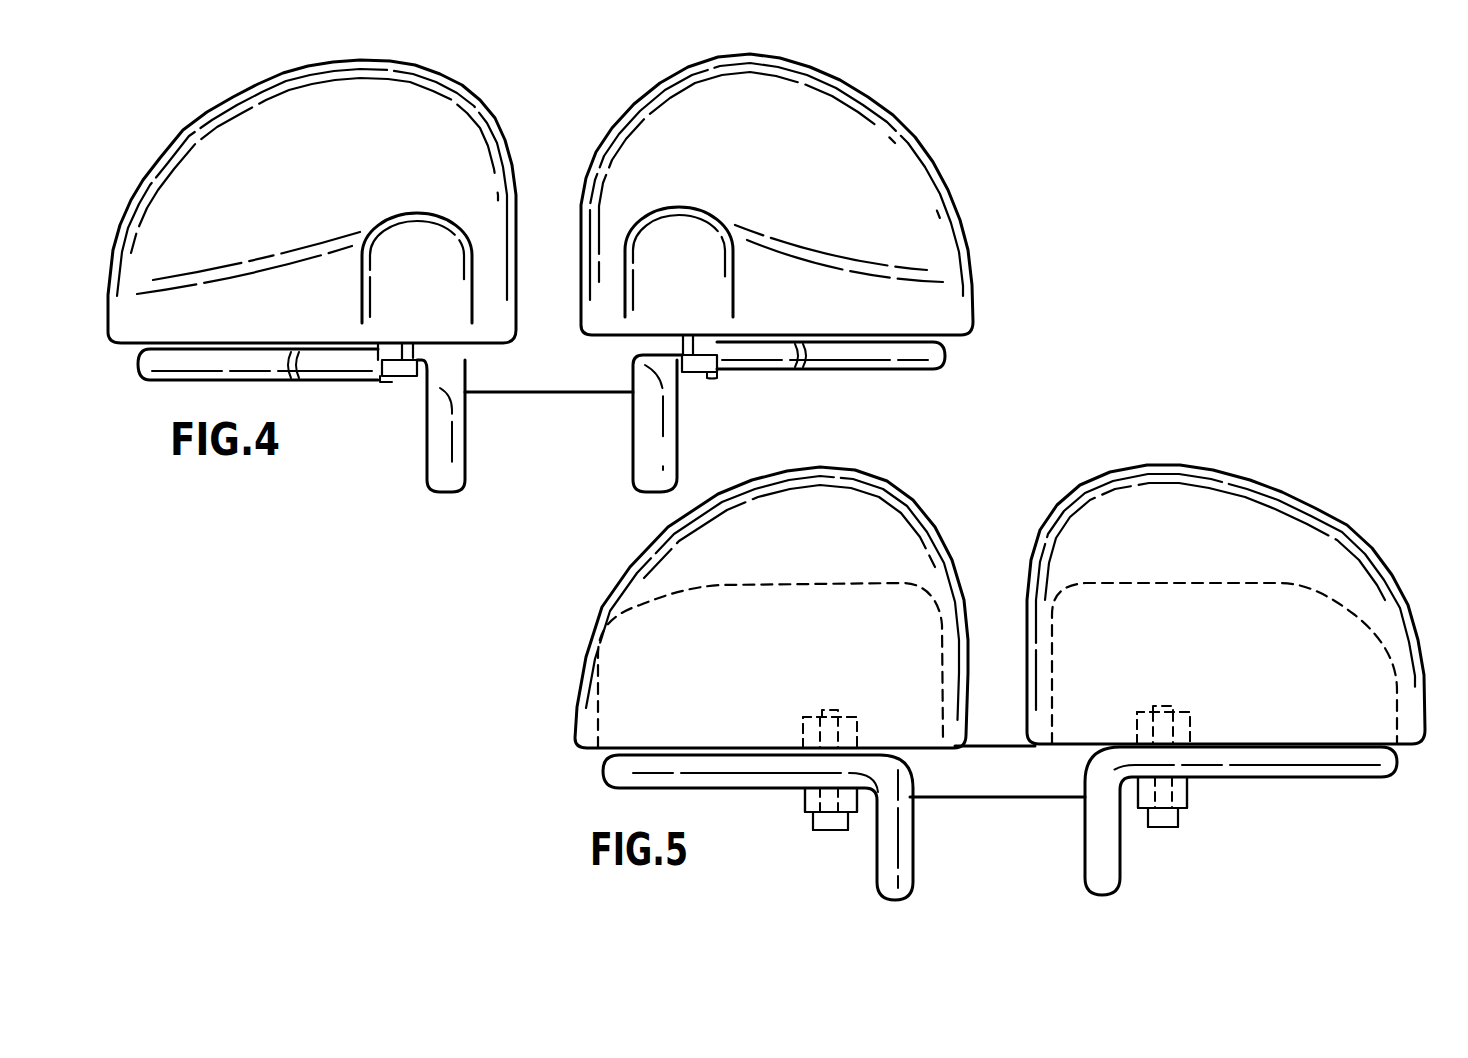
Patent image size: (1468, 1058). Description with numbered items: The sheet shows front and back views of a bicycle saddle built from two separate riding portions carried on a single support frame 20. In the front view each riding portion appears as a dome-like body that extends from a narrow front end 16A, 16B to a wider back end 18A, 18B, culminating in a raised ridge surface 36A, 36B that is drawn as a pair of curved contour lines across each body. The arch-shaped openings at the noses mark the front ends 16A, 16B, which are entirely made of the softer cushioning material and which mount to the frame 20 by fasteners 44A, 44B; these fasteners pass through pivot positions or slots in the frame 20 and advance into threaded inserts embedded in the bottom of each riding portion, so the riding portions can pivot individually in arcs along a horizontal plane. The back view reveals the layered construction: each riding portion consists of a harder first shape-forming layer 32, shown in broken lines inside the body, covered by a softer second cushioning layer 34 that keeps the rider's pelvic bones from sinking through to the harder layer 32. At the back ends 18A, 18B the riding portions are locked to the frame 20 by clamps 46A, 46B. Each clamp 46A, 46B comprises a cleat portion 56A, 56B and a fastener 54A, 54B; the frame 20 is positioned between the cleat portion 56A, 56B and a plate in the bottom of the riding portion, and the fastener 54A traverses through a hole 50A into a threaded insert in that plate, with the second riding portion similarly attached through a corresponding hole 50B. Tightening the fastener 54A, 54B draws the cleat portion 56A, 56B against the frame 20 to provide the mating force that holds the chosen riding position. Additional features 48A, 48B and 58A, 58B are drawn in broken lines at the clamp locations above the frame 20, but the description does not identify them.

In FIG. 4, the back end 18A is at (473, 97).
In FIG. 4, the back end 18B is at (867, 92).
In FIG. 5, the back end 18B is at (918, 503).
In FIG. 4, the front end 16A is at (417, 233).
In FIG. 4, the front end 16B is at (678, 228).
In FIG. 4, the raised ridge surface 36A is at (278, 121).
In FIG. 4, the raised ridge surface 36B is at (815, 112).
In FIG. 4, the fastener 44A is at (392, 375).
In FIG. 4, the fastener 44B is at (702, 378).
In FIG. 4, the support frame 20 is at (427, 447).
In FIG. 5, the second cushioning layer 34 is at (663, 567).
In FIG. 5, the first shape-forming layer 32 is at (617, 643).
In FIG. 5, the first pin shank 48A is at (1162, 707).
In FIG. 5, the second pin shank 48B is at (832, 713).
In FIG. 5, the first pin receiving bore 58A is at (1190, 725).
In FIG. 5, the second pin receiving bore 58B is at (798, 727).
In FIG. 5, the hole 50A is at (1190, 795).
In FIG. 5, the second pin body 50B is at (803, 798).
In FIG. 5, the cleat portion 56A is at (1190, 810).
In FIG. 5, the cleat portion 56B is at (803, 813).
In FIG. 5, the clamp 46A is at (1185, 833).
In FIG. 5, the clamp 46B is at (810, 835).
In FIG. 5, the fastener 54A is at (1163, 830).
In FIG. 5, the fastener 54B is at (833, 833).